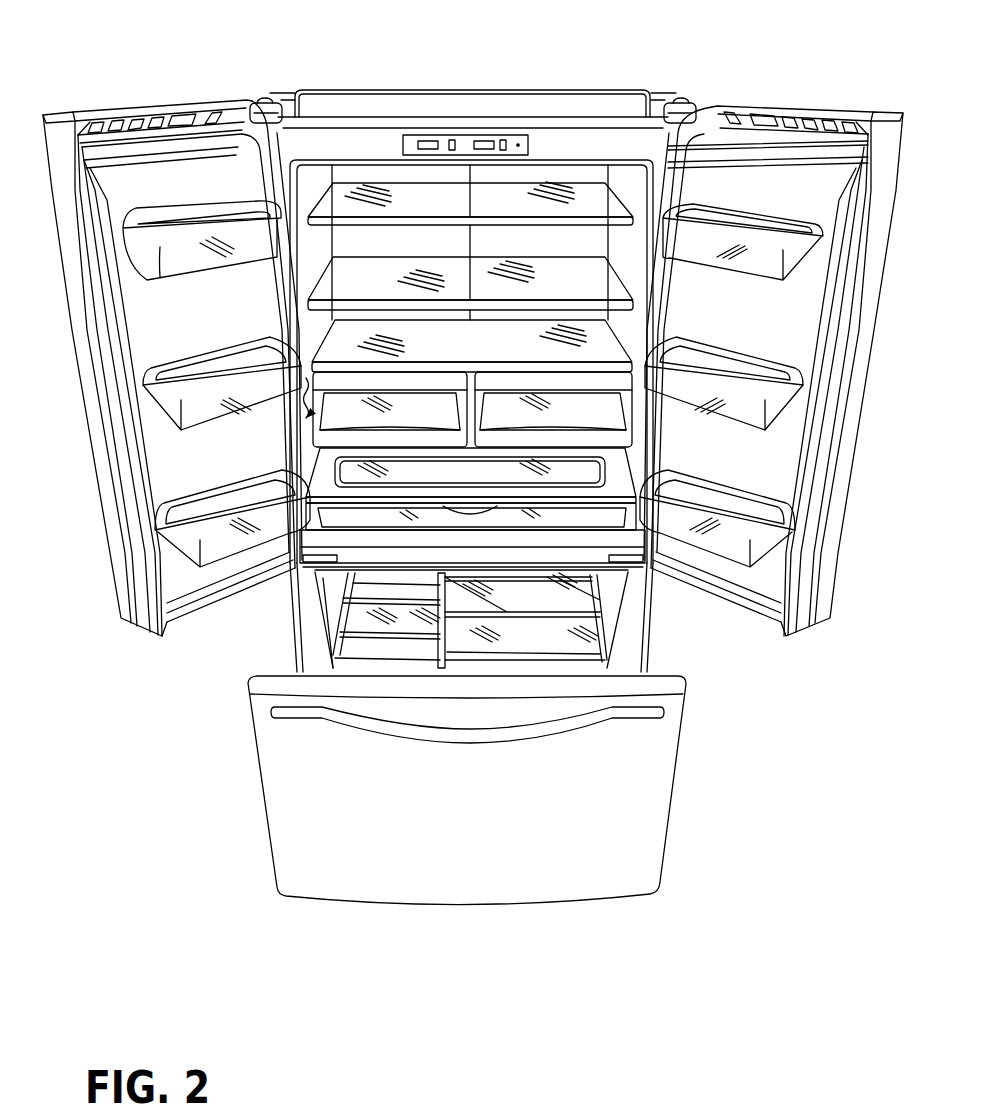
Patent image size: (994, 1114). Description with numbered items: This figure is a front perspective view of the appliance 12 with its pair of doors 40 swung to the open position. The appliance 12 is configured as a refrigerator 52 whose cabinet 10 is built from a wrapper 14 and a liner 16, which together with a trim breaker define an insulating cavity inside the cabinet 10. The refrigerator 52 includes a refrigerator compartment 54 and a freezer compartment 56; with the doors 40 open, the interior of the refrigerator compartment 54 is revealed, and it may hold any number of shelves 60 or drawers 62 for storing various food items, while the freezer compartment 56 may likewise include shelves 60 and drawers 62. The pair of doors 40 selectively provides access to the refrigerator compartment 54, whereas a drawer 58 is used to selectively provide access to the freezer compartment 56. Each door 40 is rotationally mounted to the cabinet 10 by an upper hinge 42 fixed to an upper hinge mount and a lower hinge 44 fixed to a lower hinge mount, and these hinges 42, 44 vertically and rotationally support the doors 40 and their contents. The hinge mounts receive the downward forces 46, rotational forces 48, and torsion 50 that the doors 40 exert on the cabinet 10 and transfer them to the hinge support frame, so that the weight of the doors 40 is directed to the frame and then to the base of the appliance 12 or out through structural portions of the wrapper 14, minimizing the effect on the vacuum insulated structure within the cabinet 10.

The cabinet 10 is at (478, 452).
The appliance 12 is at (476, 77).
The wrapper 14 is at (418, 108).
The liner 16 is at (317, 181).
The door 40 is at (478, 334).
The upper hinge 42 is at (272, 108).
The lower hinge 44 is at (303, 560).
The downward forces 46 is at (297, 201).
The rotational forces 48 is at (54, 80).
The torsion 50 is at (157, 425).
The refrigerator 52 is at (573, 96).
The refrigerator compartment 54 is at (306, 438).
The freezer compartment 56 is at (330, 637).
The drawer 58 is at (323, 822).
The shelves 60 is at (607, 347).
The drawers 62 is at (602, 517).